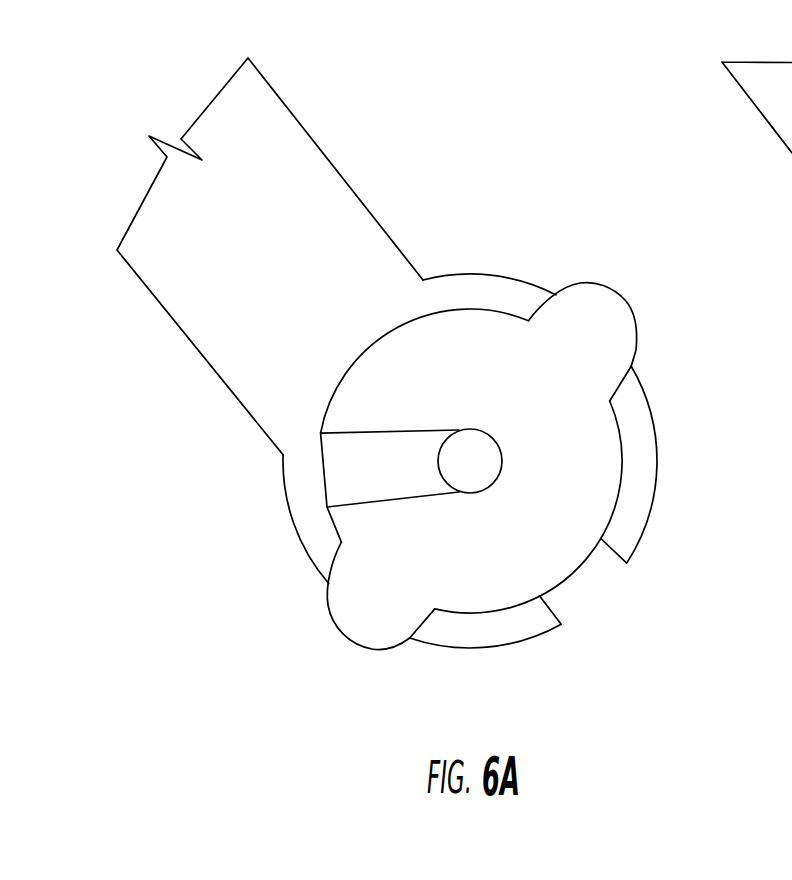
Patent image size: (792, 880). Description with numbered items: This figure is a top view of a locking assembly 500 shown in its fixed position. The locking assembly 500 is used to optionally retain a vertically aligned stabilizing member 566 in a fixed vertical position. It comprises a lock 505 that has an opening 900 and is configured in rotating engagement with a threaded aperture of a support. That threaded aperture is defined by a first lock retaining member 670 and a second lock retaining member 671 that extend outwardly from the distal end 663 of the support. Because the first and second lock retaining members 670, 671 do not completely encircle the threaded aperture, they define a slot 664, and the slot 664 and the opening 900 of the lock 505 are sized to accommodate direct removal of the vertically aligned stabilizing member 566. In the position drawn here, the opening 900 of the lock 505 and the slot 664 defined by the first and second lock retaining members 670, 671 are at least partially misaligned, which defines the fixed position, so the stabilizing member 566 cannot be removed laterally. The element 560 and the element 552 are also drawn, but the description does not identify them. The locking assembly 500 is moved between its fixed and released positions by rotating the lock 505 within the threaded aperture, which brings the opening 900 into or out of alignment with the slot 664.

The locking assembly 500 is at (562, 175).
The lock 505 is at (458, 342).
The cam body 552 is at (607, 310).
The shaft 560 is at (300, 155).
The stabilizing member 566 is at (489, 469).
The distal end 663 is at (697, 395).
The slot 664 is at (593, 590).
The first lock retaining member 670 is at (648, 505).
The second lock retaining member 671 is at (450, 630).
The opening 900 is at (353, 470).